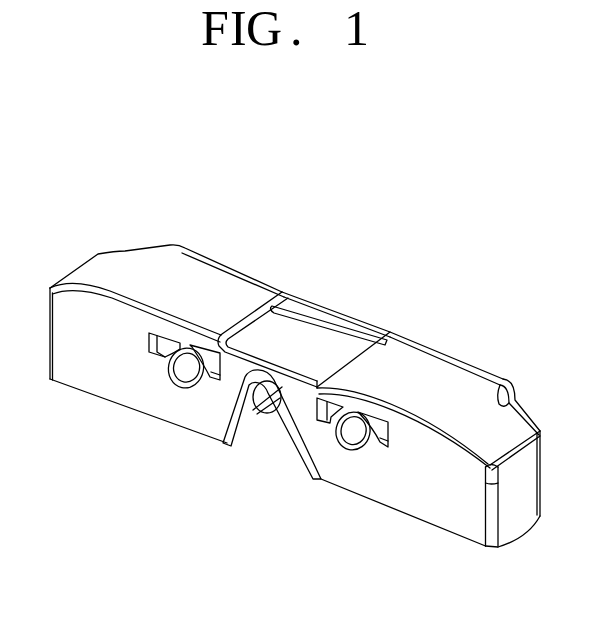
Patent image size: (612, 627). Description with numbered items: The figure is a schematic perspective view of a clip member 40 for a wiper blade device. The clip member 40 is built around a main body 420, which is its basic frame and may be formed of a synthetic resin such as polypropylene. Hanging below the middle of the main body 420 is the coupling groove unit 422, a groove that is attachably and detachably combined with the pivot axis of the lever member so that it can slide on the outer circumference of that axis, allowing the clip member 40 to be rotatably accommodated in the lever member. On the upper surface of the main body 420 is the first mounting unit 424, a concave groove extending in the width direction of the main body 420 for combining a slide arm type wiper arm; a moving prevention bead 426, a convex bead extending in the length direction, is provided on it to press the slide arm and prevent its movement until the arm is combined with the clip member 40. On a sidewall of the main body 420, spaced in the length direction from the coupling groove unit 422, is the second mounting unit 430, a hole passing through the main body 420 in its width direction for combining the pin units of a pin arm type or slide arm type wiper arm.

The clip member 40 is at (346, 270).
The main body 420 is at (477, 390).
The coupling groove unit 422 is at (265, 394).
The first mounting unit 424 is at (258, 345).
The moving prevention bead 426 is at (350, 332).
The second mounting unit 430 is at (182, 373).